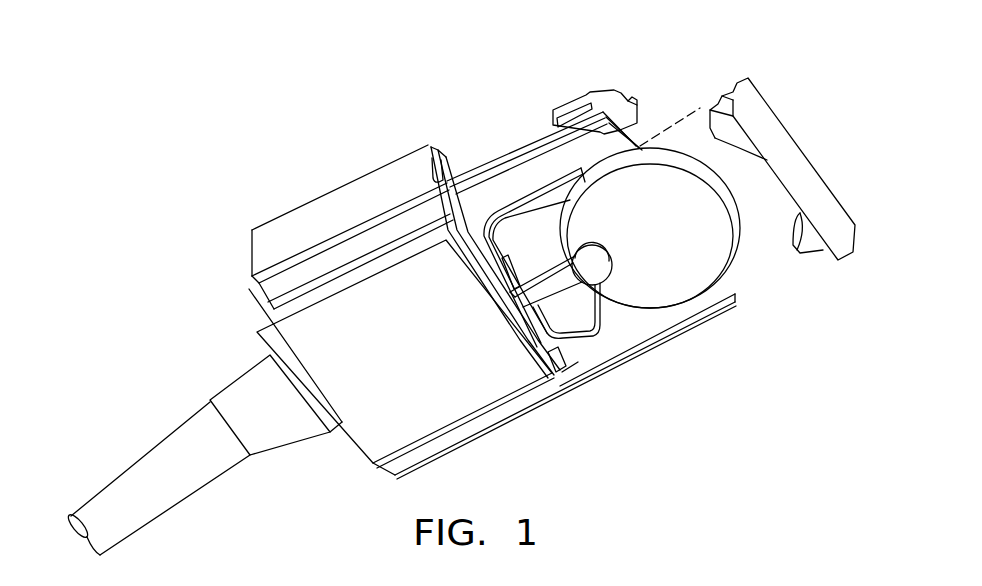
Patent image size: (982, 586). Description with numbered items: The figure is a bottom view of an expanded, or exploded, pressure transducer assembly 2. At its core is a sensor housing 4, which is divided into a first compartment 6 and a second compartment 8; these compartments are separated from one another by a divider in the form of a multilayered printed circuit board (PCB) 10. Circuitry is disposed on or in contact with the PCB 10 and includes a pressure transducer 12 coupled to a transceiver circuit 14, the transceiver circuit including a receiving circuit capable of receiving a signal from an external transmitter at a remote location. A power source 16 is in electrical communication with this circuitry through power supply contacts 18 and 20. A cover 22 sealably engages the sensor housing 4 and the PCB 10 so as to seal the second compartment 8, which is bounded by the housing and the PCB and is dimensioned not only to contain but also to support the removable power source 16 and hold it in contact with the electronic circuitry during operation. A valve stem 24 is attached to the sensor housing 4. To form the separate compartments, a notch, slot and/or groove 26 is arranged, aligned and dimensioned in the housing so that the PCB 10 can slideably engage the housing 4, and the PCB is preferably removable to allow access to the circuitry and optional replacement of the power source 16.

The pressure transducer assembly 2 is at (280, 198).
The sensor housing 4 is at (345, 197).
The first compartment 6 is at (448, 180).
The second compartment 8 is at (550, 356).
The multilayered printed circuit board (PCB) 10 is at (720, 300).
The pressure transducer 12 is at (631, 101).
The transceiver circuit 14 is at (571, 108).
The power source 16 is at (670, 273).
The power supply contact 18 is at (588, 272).
The power supply contact 20 is at (590, 342).
The cover 22 is at (783, 140).
The valve stem 24 is at (167, 460).
The notch, slot and/or groove 26 is at (437, 162).